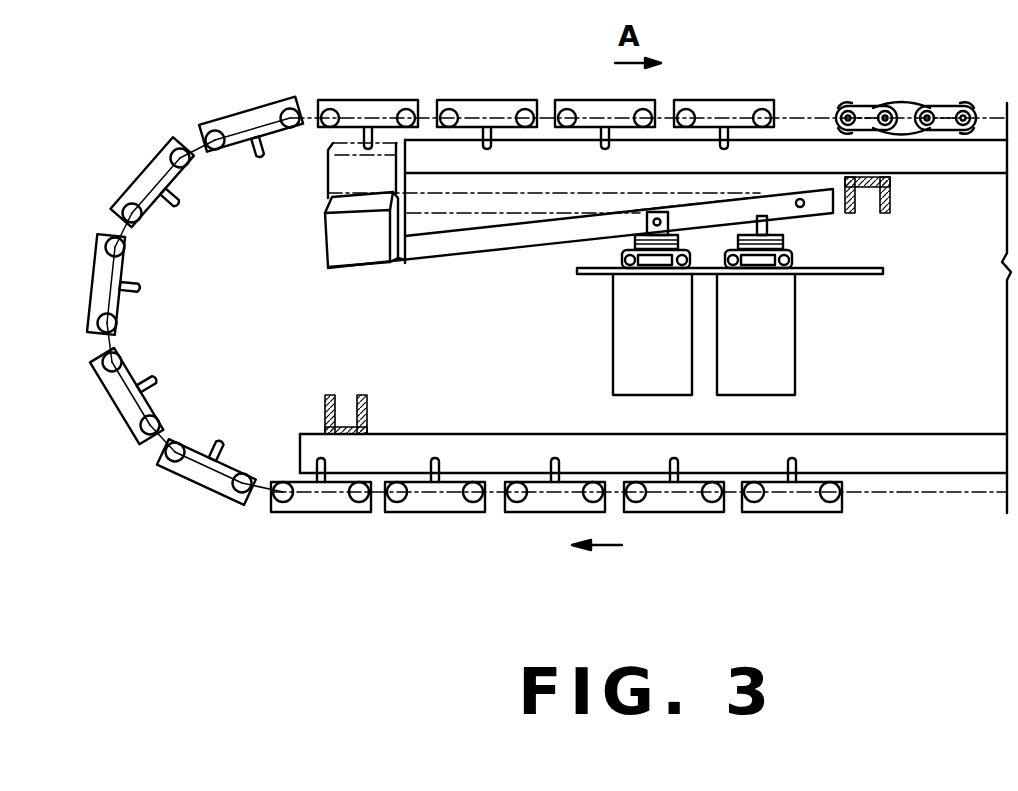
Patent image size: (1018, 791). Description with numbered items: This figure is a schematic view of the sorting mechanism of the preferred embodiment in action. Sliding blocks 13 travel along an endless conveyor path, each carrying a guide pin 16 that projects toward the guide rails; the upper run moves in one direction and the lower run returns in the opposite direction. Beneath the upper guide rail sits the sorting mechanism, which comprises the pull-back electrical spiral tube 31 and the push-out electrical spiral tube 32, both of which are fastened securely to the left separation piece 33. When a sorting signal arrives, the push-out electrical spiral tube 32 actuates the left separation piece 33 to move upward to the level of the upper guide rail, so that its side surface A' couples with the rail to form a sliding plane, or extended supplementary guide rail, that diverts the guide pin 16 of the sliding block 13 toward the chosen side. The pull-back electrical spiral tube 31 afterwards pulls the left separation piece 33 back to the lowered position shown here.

The sliding block 13 is at (364, 110).
The guide pin 16 is at (258, 163).
The pull-back electrical spiral tube 31 is at (640, 362).
The push-out electrical spiral tube 32 is at (770, 362).
The left separation piece 33 is at (455, 240).
The side surface of the separation piece A' is at (365, 237).